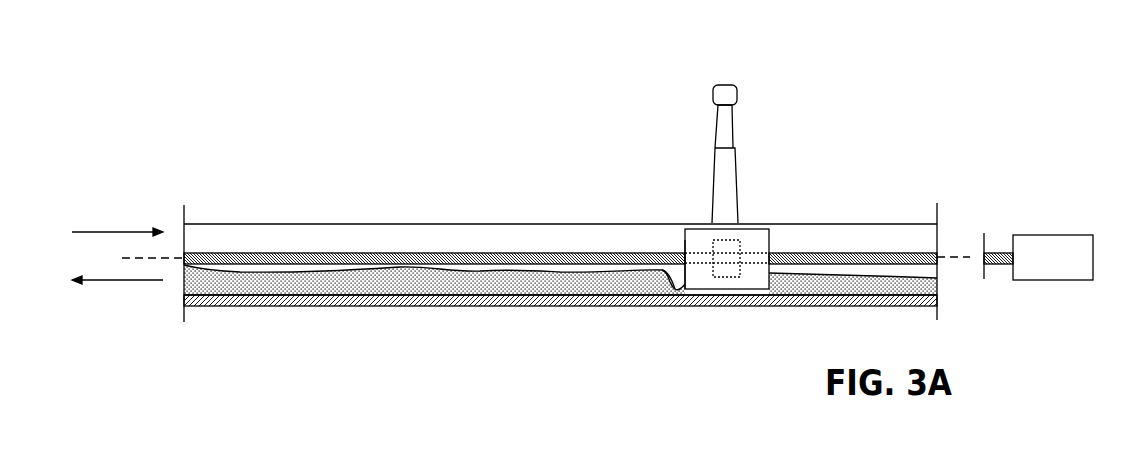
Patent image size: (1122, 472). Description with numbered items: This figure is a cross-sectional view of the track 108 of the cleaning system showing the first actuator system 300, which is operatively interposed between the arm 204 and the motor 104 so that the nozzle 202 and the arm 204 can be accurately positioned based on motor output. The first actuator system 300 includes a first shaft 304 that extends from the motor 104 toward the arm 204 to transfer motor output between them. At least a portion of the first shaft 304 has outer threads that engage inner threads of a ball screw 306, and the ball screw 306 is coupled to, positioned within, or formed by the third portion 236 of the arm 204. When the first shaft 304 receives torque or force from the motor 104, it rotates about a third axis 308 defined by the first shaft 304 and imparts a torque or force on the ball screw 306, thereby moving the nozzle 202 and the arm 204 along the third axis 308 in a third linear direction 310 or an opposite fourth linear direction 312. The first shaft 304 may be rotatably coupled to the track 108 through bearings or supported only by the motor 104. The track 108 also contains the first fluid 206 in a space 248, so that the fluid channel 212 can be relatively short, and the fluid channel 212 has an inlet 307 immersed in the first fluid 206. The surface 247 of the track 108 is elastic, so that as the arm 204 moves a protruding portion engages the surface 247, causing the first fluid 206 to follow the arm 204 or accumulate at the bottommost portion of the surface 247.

The first actuator system 300 is at (1055, 143).
The space 248 is at (308, 223).
The first fluid 206 is at (310, 268).
The surface 247 is at (500, 295).
The track 108 is at (478, 307).
The first ball screw 306 is at (740, 277).
The third portion 236 is at (685, 240).
The arm 204 is at (690, 146).
The nozzle 202 is at (738, 94).
The fluid channel 212 is at (675, 290).
The inlet 307 is at (660, 287).
The fourth linear direction 312 is at (103, 232).
The third linear direction 310 is at (133, 282).
The third axis 308 is at (163, 260).
The motor 104 is at (1015, 256).
The first shaft 304 is at (428, 252).